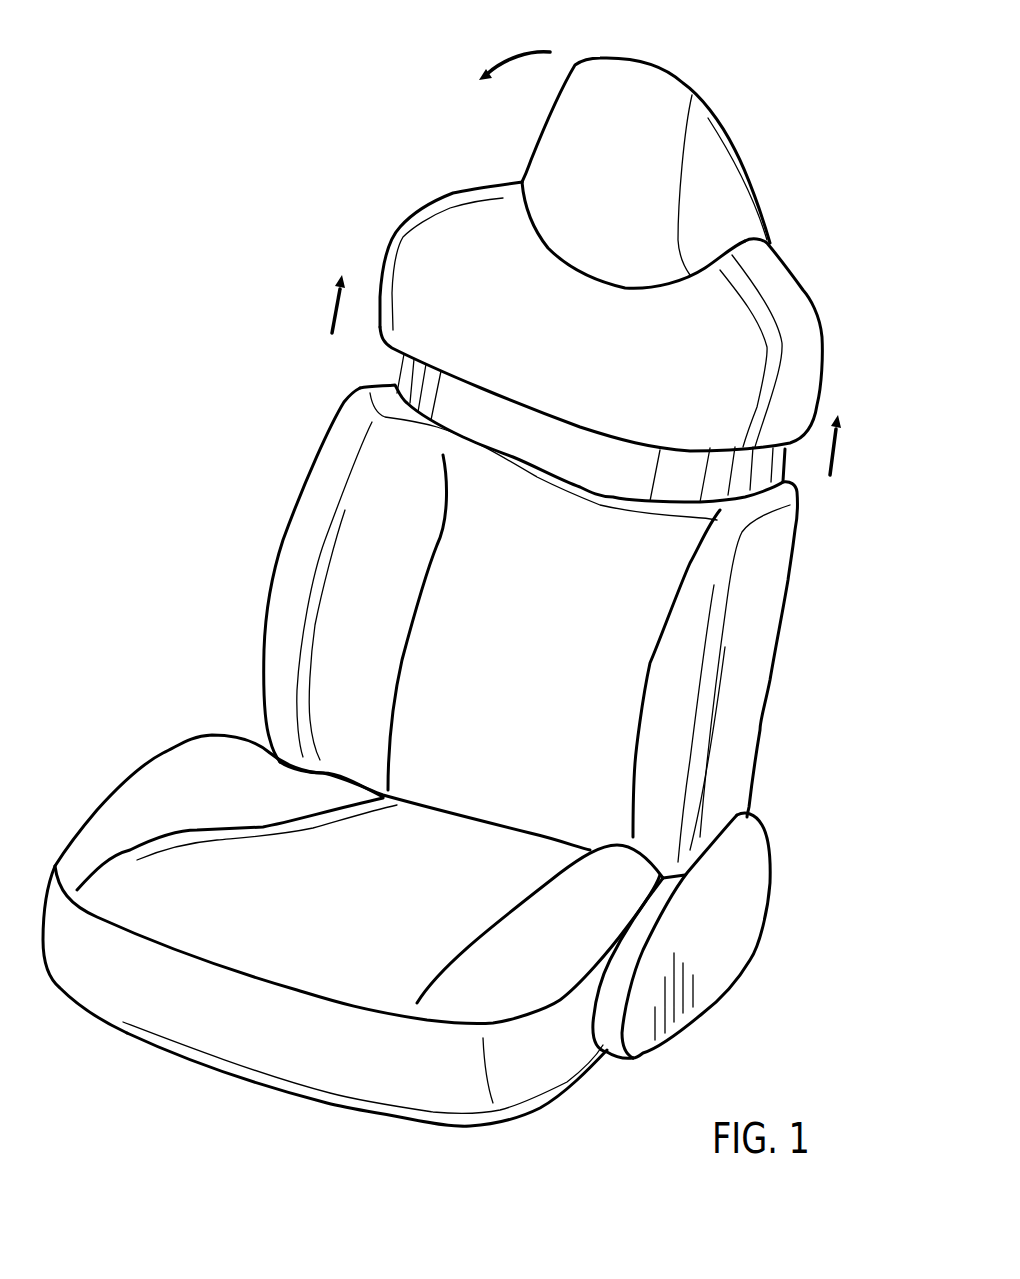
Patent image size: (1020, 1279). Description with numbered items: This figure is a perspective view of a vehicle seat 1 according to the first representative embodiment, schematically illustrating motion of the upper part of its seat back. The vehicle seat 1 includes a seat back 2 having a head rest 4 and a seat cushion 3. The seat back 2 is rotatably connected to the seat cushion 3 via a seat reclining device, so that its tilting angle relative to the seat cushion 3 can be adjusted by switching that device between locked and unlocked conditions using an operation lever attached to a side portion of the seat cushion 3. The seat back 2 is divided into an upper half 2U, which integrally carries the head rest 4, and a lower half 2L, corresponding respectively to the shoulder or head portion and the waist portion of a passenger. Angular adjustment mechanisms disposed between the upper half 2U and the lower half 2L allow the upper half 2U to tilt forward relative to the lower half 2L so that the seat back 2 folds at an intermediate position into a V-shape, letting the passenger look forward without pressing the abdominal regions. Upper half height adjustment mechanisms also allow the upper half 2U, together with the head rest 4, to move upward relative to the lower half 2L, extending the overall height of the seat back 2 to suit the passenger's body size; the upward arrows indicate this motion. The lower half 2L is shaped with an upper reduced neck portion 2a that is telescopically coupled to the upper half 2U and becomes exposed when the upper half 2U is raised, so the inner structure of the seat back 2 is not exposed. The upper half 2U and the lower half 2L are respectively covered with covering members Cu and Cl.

The vehicle seat 1 is at (258, 230).
The seat back 2 is at (340, 428).
The upper half 2U is at (420, 240).
The lower half 2L is at (290, 560).
The neck portion 2a is at (675, 480).
The seat cushion 3 is at (137, 772).
The head rest 4 is at (652, 82).
The covering member Cu is at (777, 293).
The covering member Cl is at (733, 678).